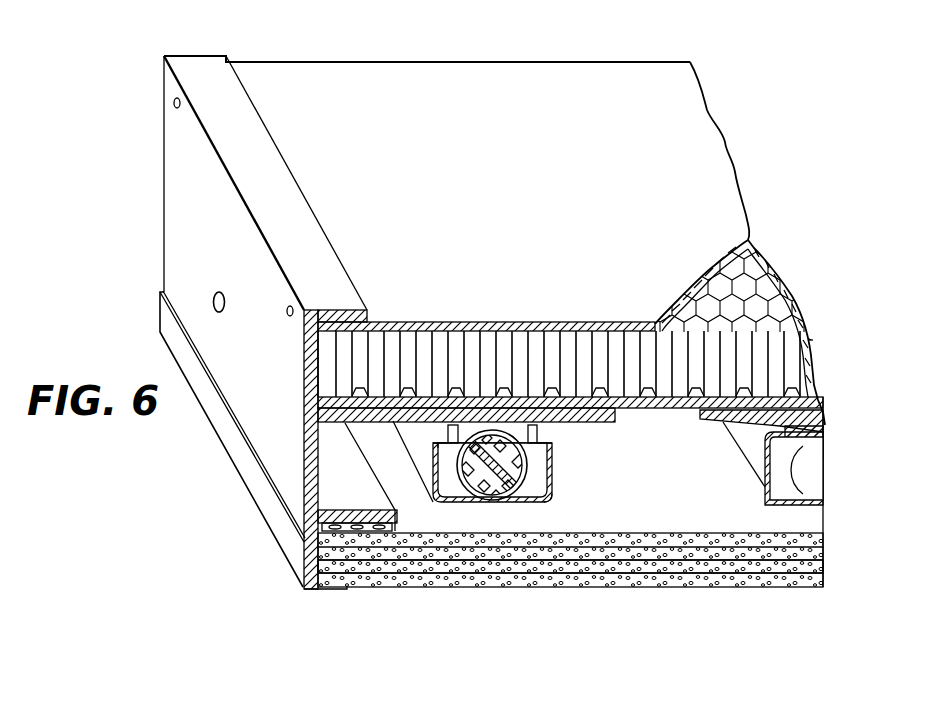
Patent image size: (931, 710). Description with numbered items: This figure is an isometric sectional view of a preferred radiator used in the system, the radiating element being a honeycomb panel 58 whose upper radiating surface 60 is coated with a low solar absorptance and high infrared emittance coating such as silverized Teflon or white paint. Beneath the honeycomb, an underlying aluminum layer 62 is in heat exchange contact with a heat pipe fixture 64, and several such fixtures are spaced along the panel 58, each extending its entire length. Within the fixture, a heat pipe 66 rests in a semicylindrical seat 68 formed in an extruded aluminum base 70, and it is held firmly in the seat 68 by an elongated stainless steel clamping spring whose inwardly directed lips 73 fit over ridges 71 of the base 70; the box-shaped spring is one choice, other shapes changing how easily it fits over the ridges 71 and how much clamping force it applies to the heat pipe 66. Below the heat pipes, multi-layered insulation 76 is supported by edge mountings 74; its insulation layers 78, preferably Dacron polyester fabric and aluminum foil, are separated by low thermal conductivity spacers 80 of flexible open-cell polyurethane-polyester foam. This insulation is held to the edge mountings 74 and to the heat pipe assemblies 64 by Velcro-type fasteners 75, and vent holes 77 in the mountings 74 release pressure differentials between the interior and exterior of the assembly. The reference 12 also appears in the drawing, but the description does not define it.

The housing corner 12 is at (536, 502).
The honeycomb panel 58 is at (548, 59).
The radiating surface 60 is at (405, 96).
The aluminum layer 62 is at (321, 405).
The heat pipe fixture 64 is at (556, 472).
The heat pipe 66 is at (458, 477).
The semicylindrical seat 68 is at (537, 434).
The extruded aluminum base 70 is at (447, 431).
The ridges 71 is at (441, 460).
The inwardly directed lips 73 is at (436, 443).
The edge mountings 74 is at (291, 445).
The fasteners 75 is at (330, 519).
The multi-layered insulation 76 is at (453, 592).
The vent holes 77 is at (219, 290).
The insulation layers 78 is at (545, 577).
The spacers 80 is at (628, 577).